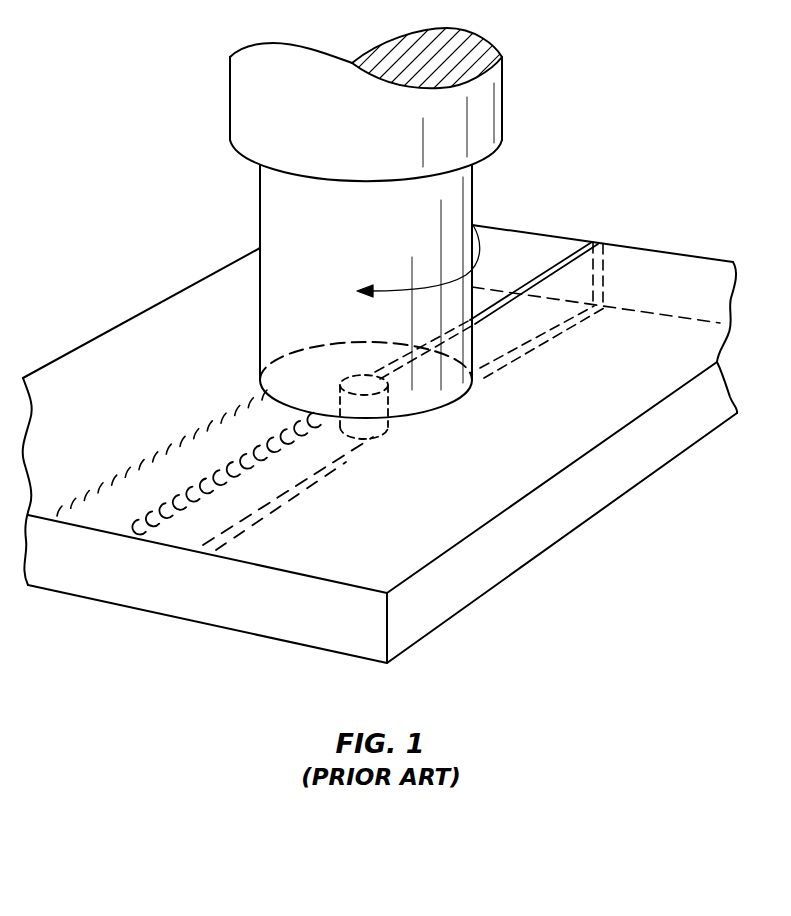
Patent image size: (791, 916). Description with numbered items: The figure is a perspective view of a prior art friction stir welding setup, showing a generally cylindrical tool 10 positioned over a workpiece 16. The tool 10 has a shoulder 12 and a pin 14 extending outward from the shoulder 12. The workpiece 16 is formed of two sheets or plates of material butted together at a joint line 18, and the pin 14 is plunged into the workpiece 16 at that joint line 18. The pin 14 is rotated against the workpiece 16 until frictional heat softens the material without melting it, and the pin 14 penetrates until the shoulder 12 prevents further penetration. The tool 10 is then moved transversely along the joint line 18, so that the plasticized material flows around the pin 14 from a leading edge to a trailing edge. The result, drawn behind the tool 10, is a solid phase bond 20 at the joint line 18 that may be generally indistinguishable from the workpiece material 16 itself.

The tool 10 is at (473, 205).
The shoulder 12 is at (450, 376).
The pin 14 is at (407, 415).
The workpiece 16 is at (667, 273).
The joint line 18 is at (597, 240).
The solid phase bond 20 is at (262, 411).